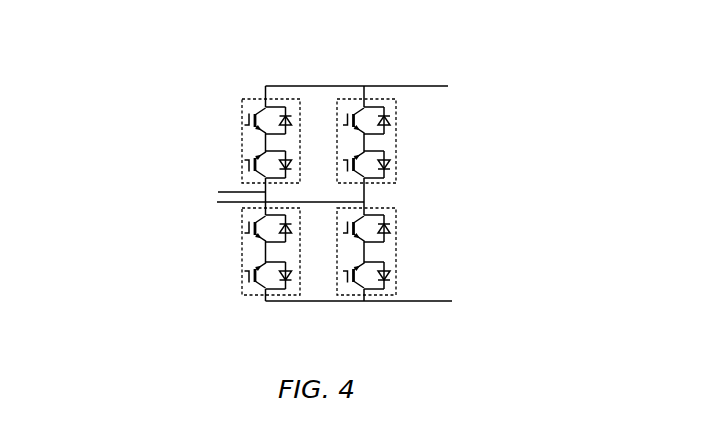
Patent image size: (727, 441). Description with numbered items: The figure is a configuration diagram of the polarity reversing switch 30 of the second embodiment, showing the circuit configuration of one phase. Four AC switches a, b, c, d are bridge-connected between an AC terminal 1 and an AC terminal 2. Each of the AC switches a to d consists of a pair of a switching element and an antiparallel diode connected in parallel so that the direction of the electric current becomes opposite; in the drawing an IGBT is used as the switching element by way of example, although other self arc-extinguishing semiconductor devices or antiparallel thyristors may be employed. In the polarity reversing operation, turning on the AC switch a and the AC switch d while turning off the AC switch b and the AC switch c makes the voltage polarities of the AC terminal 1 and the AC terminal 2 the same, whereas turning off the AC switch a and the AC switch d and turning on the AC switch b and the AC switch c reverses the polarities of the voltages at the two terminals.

The polarity reversing switch 30 is at (213, 32).
The AC switch a is at (233, 105).
The AC switch b is at (232, 250).
The AC switch c is at (330, 92).
The AC switch d is at (325, 290).
The AC terminal 1 is at (209, 195).
The AC terminal 2 is at (448, 282).